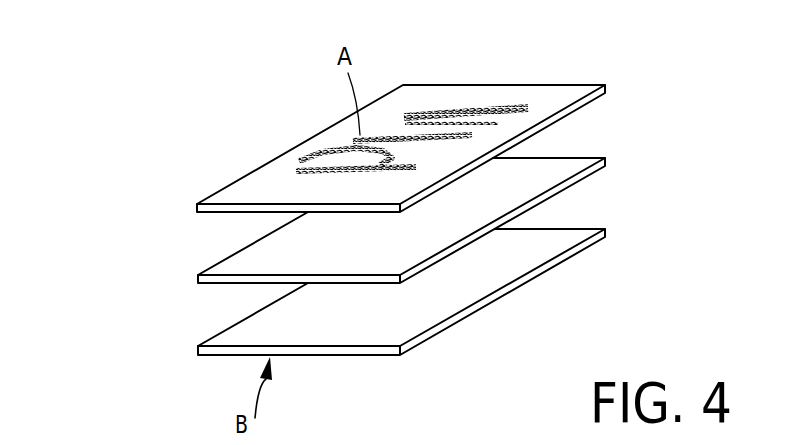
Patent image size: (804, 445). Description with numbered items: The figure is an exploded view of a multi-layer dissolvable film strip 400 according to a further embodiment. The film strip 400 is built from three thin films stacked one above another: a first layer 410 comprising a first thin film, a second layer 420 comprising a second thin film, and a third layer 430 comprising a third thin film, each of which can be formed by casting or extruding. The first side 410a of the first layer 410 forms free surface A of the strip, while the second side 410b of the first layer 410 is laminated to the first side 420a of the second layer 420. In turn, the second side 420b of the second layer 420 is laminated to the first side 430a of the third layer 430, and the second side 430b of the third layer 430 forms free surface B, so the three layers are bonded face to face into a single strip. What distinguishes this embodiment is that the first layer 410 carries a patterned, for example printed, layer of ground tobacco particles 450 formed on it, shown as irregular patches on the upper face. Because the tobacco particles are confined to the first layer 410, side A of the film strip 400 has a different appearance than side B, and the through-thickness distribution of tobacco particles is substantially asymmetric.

The multi-layer film strip 400 is at (382, 208).
The first layer 410 is at (318, 139).
The first side of first layer 410a is at (378, 111).
The second side of first layer 410b is at (218, 213).
The second layer 420 is at (337, 214).
The first side of second layer 420a is at (562, 170).
The second side of second layer 420b is at (360, 285).
The third layer 430 is at (318, 313).
The first side of third layer 430a is at (228, 341).
The second side of third layer 430b is at (362, 355).
The patterned layer of ground tobacco particles 450 is at (487, 110).